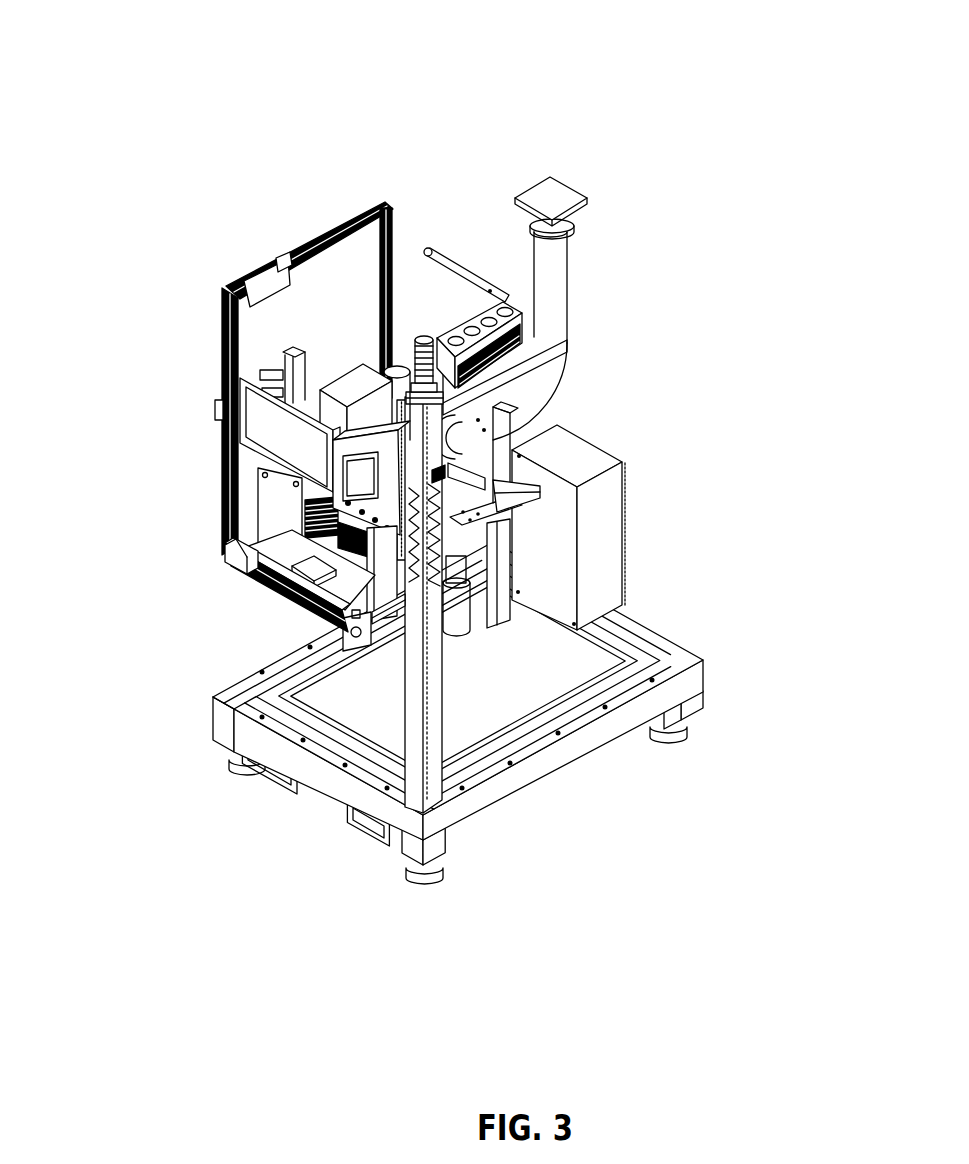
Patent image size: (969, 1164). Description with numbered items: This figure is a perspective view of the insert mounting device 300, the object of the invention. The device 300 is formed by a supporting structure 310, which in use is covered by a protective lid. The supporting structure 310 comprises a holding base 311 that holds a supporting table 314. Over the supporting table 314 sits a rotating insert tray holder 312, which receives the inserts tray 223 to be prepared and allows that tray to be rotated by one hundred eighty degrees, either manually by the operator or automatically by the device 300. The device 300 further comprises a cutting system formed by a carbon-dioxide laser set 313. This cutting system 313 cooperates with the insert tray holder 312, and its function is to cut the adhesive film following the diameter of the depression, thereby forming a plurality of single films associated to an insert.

The insert mounting device 300 is at (170, 142).
The supporting structure 310 is at (597, 742).
The holding base 311 is at (613, 677).
The insert tray holder 312 is at (345, 592).
The CO2 laser set 313 is at (447, 466).
The supporting table 314 is at (218, 557).
The inserts tray 223 is at (333, 560).